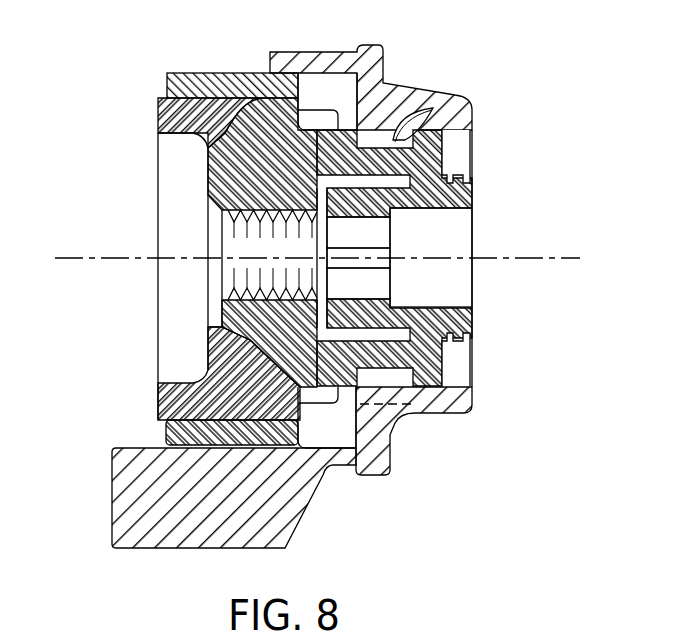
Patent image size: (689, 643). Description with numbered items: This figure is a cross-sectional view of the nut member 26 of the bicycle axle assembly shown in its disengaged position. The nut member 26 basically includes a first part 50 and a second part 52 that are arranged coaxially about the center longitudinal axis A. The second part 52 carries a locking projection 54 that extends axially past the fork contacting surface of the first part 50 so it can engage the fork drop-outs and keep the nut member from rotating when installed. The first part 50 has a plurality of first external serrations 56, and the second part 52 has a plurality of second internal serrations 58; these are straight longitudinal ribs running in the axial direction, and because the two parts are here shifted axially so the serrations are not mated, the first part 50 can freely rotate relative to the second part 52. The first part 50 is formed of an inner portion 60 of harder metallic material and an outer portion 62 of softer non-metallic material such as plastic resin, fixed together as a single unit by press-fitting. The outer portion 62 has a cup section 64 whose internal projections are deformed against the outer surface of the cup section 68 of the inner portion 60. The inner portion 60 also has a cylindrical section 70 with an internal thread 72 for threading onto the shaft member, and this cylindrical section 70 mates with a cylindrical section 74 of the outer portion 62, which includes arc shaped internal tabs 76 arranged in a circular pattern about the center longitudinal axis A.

The nut member 26 is at (500, 57).
The first part 50 is at (76, 66).
The second part 52 is at (392, 70).
The locking projection 54 is at (145, 498).
The first external serrations 56 is at (318, 122).
The second internal serrations 58 is at (433, 130).
The inner portion 60 is at (159, 113).
The outer portion 62 is at (165, 82).
The cup section 64 is at (168, 432).
The cup section 68 is at (172, 398).
The cylindrical section 70 is at (243, 153).
The internal thread 72 is at (253, 297).
The cylindrical section 74 is at (442, 160).
The arc shaped internal tabs 76 is at (353, 217).
The center longitudinal axis A is at (552, 258).